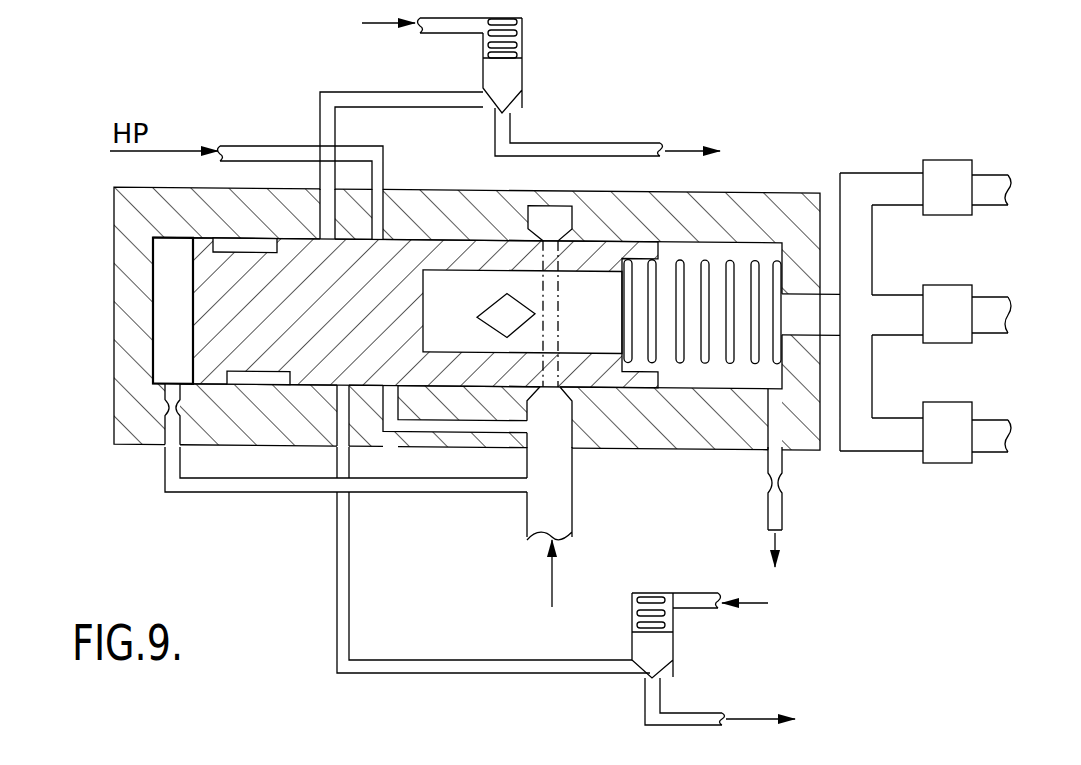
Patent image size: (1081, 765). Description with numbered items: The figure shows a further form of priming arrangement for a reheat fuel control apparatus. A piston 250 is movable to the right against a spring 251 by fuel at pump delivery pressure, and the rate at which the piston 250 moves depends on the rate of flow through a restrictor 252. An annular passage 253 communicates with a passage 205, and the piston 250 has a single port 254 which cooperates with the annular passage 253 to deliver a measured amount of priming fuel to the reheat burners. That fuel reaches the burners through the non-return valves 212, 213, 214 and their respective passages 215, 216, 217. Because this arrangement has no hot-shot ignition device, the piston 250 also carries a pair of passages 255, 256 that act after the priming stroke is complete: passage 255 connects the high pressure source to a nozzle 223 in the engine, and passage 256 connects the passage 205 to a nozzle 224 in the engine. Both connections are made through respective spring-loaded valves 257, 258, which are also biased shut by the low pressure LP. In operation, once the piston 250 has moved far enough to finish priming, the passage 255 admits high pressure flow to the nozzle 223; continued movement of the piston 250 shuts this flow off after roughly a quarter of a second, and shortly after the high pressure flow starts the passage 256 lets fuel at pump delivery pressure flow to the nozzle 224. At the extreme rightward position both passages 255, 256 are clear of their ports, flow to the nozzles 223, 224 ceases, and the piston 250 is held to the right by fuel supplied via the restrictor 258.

The passage 205 is at (550, 503).
The non-return valve 212 is at (948, 447).
The non-return valve 213 is at (952, 323).
The non-return valve 214 is at (935, 205).
The passage 215 is at (993, 437).
The passage 216 is at (998, 318).
The passage 217 is at (988, 192).
The nozzle 223 is at (713, 135).
The nozzle 224 is at (772, 701).
The piston 250 is at (400, 262).
The spring 251 is at (705, 262).
The restrictor 252 is at (167, 410).
The annular passage 253 is at (545, 222).
The port 254 is at (498, 315).
The passage 255 is at (247, 243).
The passage 256 is at (247, 382).
The spring-loaded valve 257 is at (532, 76).
The spring-loaded valve 258 is at (782, 483).